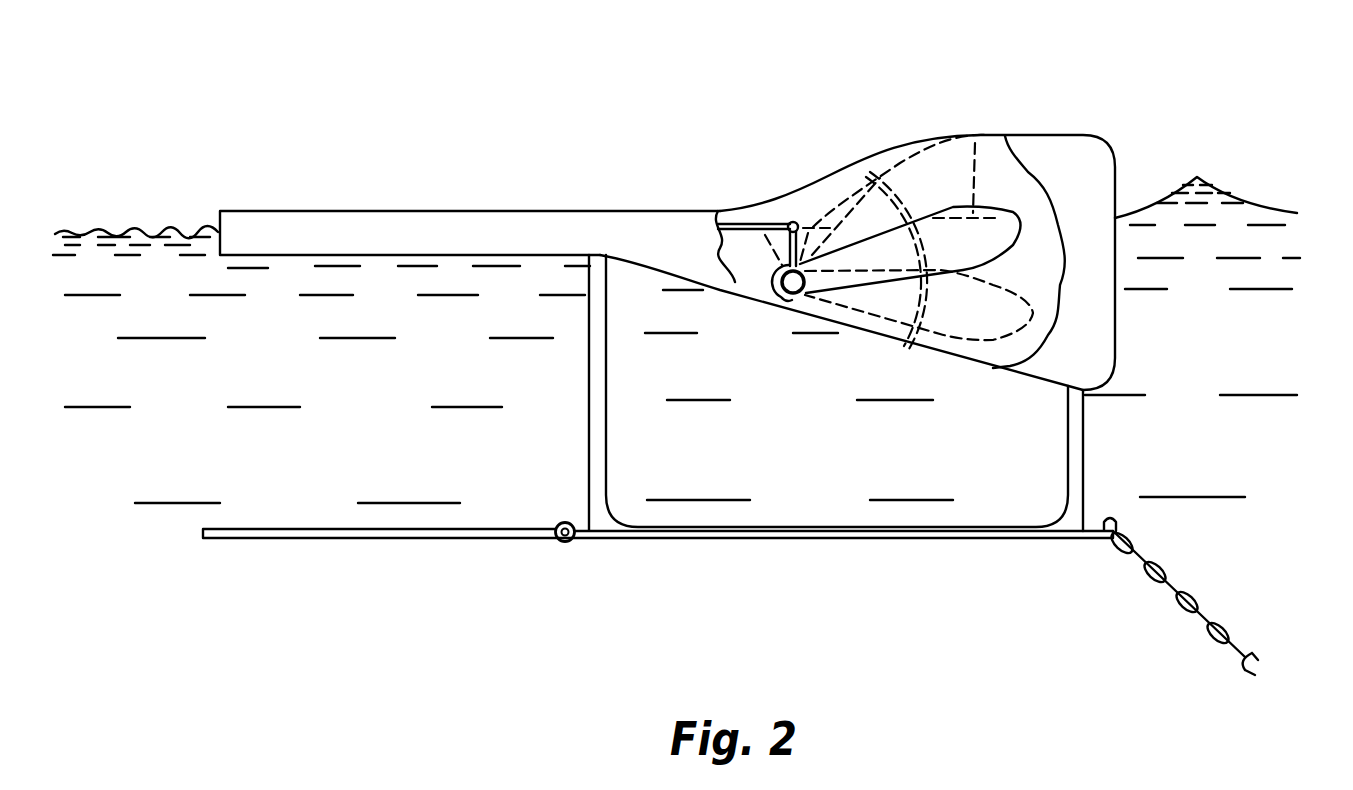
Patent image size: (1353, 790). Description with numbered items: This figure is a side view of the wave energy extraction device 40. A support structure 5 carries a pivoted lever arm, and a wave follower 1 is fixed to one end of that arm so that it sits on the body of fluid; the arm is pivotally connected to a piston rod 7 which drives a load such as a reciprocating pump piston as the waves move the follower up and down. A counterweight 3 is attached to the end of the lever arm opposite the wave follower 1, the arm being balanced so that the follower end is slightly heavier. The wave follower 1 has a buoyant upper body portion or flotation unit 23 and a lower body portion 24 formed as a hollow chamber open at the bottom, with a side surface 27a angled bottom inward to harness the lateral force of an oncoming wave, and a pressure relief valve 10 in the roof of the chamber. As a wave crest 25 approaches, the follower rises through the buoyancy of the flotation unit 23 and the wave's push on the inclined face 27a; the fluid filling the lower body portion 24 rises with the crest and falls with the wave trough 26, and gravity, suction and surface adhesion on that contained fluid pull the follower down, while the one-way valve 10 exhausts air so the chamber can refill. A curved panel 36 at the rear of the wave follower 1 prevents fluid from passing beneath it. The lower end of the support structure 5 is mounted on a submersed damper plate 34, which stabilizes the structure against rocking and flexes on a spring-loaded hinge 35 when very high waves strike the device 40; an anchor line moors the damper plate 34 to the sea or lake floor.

The wave follower 1 is at (945, 160).
The counterweight 3 is at (775, 296).
The support structure 5 is at (455, 222).
The piston rod 7 is at (752, 225).
The pressure relief valve 10 is at (955, 212).
The upper body portion or flotation unit 23 is at (993, 208).
The lower body portion 24 is at (972, 245).
The wave crest 25 is at (1197, 177).
The wave trough 26 is at (1297, 213).
The side surface (inclined face) 27a is at (1000, 248).
The damper plate 34 is at (757, 540).
The spring-loaded hinge 35 is at (570, 541).
The curved panel 36 is at (915, 333).
The wave energy extraction device 40 is at (730, 346).